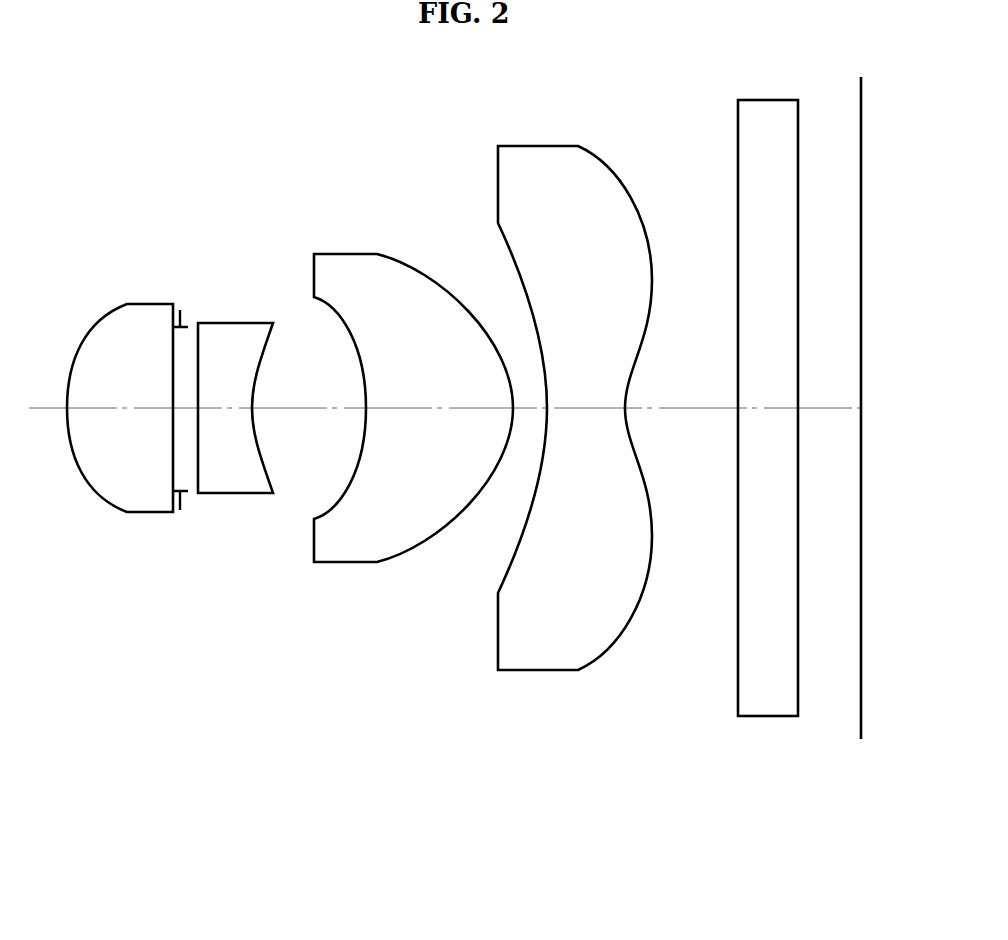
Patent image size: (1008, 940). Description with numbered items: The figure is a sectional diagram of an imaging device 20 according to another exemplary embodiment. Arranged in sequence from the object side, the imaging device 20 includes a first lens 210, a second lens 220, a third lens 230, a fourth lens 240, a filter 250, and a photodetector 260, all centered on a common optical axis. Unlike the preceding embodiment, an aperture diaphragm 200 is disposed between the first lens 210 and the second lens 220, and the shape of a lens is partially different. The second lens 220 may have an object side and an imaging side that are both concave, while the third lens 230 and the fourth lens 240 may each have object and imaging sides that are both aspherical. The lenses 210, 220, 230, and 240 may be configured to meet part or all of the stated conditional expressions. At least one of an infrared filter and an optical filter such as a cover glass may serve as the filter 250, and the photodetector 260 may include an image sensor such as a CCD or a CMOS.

The imaging device 20 is at (263, 150).
The aperture diaphragm 200 is at (190, 500).
The first lens 210 is at (135, 503).
The second lens 220 is at (245, 492).
The third lens 230 is at (353, 542).
The fourth lens 240 is at (542, 653).
The filter 250 is at (765, 703).
The photodetector 260 is at (861, 705).